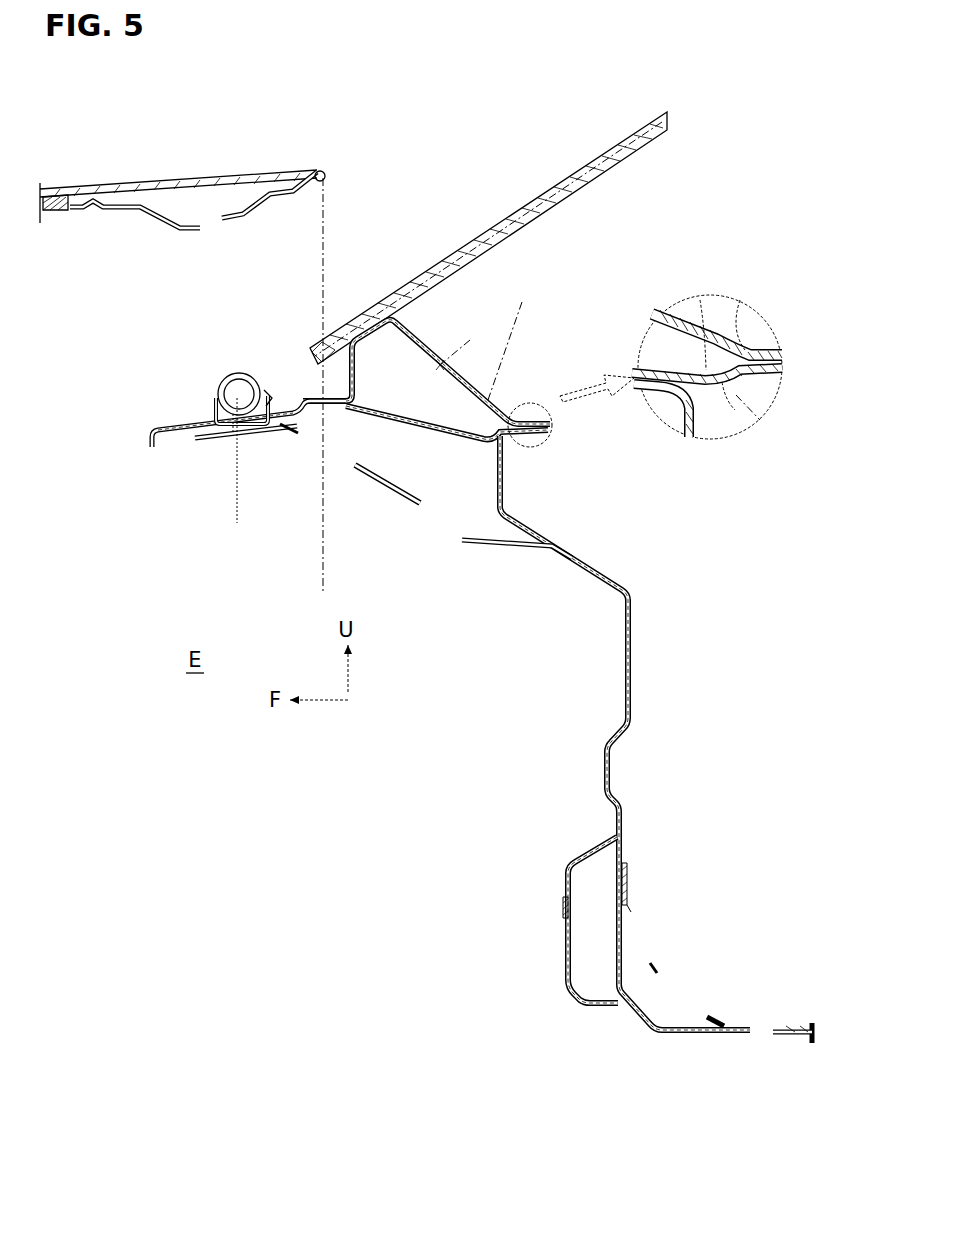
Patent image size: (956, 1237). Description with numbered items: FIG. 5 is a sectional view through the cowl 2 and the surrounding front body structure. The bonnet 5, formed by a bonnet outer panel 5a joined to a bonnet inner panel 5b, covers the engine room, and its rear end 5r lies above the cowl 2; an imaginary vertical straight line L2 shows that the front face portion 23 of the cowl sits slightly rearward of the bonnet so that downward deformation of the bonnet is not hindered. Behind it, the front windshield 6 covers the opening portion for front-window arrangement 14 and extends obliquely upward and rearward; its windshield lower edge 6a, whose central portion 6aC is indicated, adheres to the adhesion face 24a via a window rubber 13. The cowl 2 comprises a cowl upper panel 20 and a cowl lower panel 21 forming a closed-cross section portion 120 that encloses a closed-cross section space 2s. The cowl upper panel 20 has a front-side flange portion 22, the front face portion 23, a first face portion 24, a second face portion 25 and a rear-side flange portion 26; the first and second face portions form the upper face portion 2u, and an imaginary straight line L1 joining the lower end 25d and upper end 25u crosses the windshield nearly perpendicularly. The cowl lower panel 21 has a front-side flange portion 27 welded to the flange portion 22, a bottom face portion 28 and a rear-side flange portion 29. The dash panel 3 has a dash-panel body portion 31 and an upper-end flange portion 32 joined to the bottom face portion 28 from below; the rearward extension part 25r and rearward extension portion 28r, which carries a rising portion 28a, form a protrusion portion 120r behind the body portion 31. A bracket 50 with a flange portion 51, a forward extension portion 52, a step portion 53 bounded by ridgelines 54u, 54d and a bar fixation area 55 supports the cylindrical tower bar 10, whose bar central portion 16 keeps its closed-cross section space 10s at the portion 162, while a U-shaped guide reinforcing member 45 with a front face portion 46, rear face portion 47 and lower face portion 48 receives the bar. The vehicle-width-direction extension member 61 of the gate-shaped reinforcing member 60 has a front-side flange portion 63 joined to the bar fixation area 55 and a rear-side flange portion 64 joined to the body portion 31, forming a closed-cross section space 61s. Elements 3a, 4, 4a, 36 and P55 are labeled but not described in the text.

The cowl 2 is at (447, 335).
The closed-cross section space 2s is at (356, 398).
The upper face portion 2u is at (494, 395).
The dash panel 3 is at (621, 690).
The lower bent portion of pillar inner 3a is at (652, 1032).
The pillar reinforcement 4 is at (564, 877).
The lower portion of reinforcement 4a is at (570, 992).
The bonnet 5 is at (195, 173).
The bonnet outer panel 5a is at (150, 186).
The bonnet inner panel 5b is at (156, 224).
The rear end of bonnet 5r is at (323, 172).
The front windshield 6 is at (468, 241).
The windshield lower edge 6a is at (316, 346).
The central portion of windshield lower edge 6aC is at (297, 279).
The tower bar 10 is at (239, 394).
The closed-cross section space 10s is at (226, 434).
The window rubber 13 is at (396, 318).
The opening portion for front-window arrangement 14 is at (547, 168).
The bar central portion 16 is at (246, 375).
The cowl upper panel 20 is at (491, 385).
The cowl lower panel 21 is at (430, 434).
The front-side flange portion 22 is at (350, 388).
The front face portion 23 is at (354, 362).
The first face portion 24 is at (316, 346).
The adhesion face 24a is at (314, 346).
The second face portion 25 is at (420, 348).
The upper end of second face portion 25u is at (400, 318).
The lower end of second face portion 25d is at (536, 418).
The rearward extension part 25r is at (752, 335).
The rear-side flange portion 26 is at (549, 424).
The front-side flange portion 27 is at (338, 408).
The bottom face portion 28 is at (432, 424).
The rising portion 28a is at (518, 436).
The rearward extension portion 28r is at (726, 400).
The rear-side flange portion 29 is at (552, 432).
The dash-panel body portion 31 is at (632, 668).
The upper-end flange portion 32 is at (490, 440).
The lower bracket 36 is at (722, 1030).
The guide reinforcing member 45 is at (218, 400).
The front face portion 46 is at (212, 415).
The rear face portion 47 is at (268, 394).
The lower face portion 48 is at (243, 432).
The bracket 50 is at (162, 418).
The flange portion 51 is at (368, 413).
The forward extension portion 52 is at (160, 446).
The step portion 53 is at (326, 408).
The upper-end ridgeline 54u is at (318, 398).
The lower-end ridgeline 54d is at (290, 431).
The bar fixation area 55 is at (237, 484).
The gate-shaped reinforcing member 60 is at (390, 485).
The vehicle-width-direction extension member 61 is at (375, 486).
The closed-cross section space 61s is at (440, 476).
The front-side flange portion 63 is at (262, 433).
The rear-side flange portion 64 is at (556, 553).
The closed-cross section portion 120 is at (462, 345).
The protrusion portion 120r is at (738, 396).
The interposed portion of bar central portion 162 is at (228, 382).
The imaginary straight line L1 is at (520, 343).
The imaginary straight line L2 is at (350, 202).
The fastening point P55 is at (232, 374).